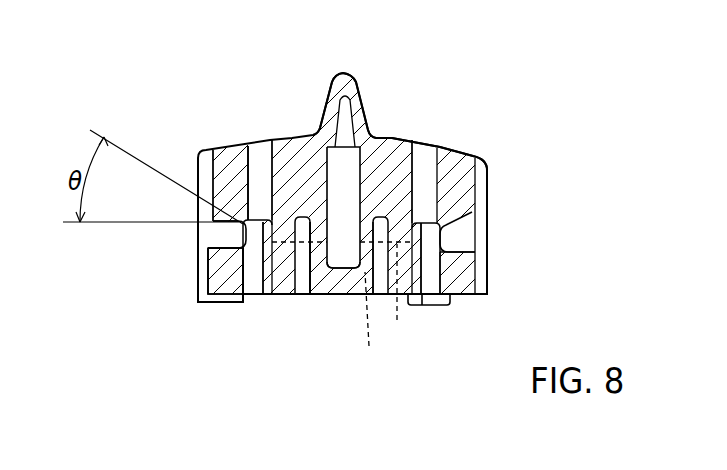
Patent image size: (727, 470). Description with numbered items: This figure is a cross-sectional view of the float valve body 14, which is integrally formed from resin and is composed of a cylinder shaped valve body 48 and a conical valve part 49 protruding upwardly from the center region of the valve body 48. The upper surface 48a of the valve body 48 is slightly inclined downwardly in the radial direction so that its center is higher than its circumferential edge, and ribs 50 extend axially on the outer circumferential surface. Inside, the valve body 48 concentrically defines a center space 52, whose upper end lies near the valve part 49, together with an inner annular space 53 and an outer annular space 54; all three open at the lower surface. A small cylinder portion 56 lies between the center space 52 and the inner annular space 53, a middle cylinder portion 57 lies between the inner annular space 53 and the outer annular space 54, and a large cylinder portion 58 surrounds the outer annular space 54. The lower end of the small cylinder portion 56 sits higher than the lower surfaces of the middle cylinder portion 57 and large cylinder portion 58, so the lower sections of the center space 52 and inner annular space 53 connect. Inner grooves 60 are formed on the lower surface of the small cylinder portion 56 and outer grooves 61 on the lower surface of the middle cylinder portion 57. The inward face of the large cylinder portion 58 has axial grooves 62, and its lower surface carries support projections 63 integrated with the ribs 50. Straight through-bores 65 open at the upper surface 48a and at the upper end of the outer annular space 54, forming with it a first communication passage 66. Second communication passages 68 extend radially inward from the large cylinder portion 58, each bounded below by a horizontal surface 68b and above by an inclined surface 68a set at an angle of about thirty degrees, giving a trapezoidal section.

The float valve body 14 is at (484, 106).
The valve body 48 is at (383, 166).
The upper surface 48a is at (456, 152).
The valve part 49 is at (344, 73).
The ribs 50 is at (198, 291).
The center space 52 is at (341, 150).
The inner annular space 53 is at (309, 287).
The outer annular space 54 is at (258, 280).
The small cylinder portion 56 is at (321, 285).
The middle cylinder portion 57 is at (301, 258).
The large cylinder portion 58 is at (200, 283).
The inner grooves 60 is at (376, 323).
The outer grooves 61 is at (396, 296).
The grooves 62 is at (246, 280).
The support projections 63 is at (222, 300).
The through-bores 65 is at (262, 150).
The first communication passage 66 is at (248, 176).
The second communication passages 68 is at (216, 233).
The inclined surface 68a is at (213, 221).
The horizontal surface 68b is at (210, 247).